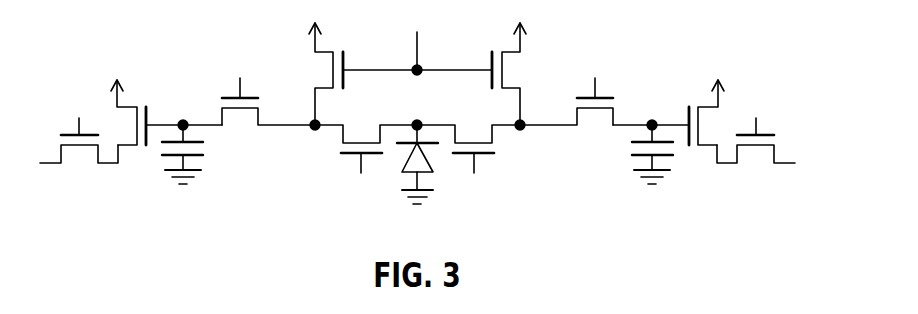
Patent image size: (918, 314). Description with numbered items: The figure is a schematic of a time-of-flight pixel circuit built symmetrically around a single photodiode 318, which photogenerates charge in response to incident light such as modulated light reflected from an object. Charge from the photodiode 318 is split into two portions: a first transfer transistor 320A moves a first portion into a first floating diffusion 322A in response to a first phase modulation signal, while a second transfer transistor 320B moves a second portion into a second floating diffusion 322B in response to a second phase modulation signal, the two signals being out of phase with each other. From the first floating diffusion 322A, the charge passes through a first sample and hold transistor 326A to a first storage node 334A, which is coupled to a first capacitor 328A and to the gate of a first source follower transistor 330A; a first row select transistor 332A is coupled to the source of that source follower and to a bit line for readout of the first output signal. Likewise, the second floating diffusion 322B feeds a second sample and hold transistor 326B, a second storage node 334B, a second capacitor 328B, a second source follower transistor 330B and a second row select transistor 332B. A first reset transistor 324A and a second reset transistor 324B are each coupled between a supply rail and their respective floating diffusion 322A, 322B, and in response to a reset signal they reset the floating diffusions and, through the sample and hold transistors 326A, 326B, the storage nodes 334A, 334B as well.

The photodiode 318 is at (428, 119).
The first transfer transistor 320A is at (366, 147).
The second transfer transistor 320B is at (469, 147).
The first floating diffusion 322A is at (304, 157).
The second floating diffusion 322B is at (530, 157).
The first reset transistor 324A is at (338, 74).
The second reset transistor 324B is at (493, 74).
The first sample and hold transistor 326A is at (268, 107).
The second sample and hold transistor 326B is at (566, 107).
The first capacitor 328A is at (196, 170).
The second capacitor 328B is at (640, 170).
The first source follower transistor 330A is at (142, 107).
The second source follower transistor 330B is at (702, 107).
The first row select transistor 332A is at (79, 143).
The second row select transistor 332B is at (756, 143).
The first storage node 334A is at (184, 86).
The second storage node 334B is at (651, 86).